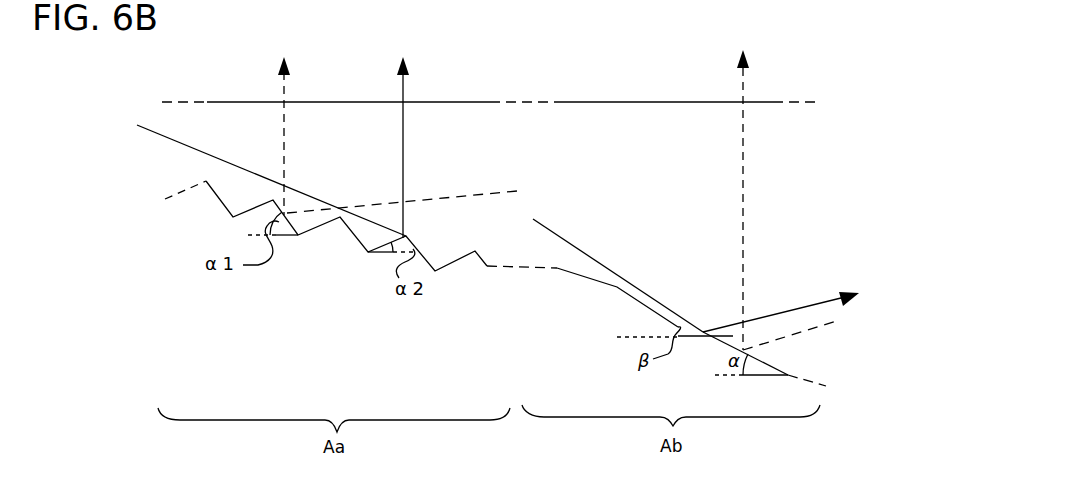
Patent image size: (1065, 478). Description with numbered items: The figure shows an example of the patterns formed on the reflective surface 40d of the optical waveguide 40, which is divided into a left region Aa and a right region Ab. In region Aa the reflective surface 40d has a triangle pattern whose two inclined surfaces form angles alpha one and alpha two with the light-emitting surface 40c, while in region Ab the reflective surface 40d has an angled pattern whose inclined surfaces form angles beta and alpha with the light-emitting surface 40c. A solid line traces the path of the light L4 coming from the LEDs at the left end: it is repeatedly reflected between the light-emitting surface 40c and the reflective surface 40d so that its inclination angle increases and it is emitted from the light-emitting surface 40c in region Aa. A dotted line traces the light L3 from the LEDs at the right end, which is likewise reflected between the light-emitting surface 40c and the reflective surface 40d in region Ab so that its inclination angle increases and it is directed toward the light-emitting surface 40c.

The optical waveguide 40 is at (494, 202).
The light-emitting surface 40c is at (585, 102).
The reflective surface 40d is at (602, 284).
The light L3 is at (509, 188).
The light L4 is at (633, 182).